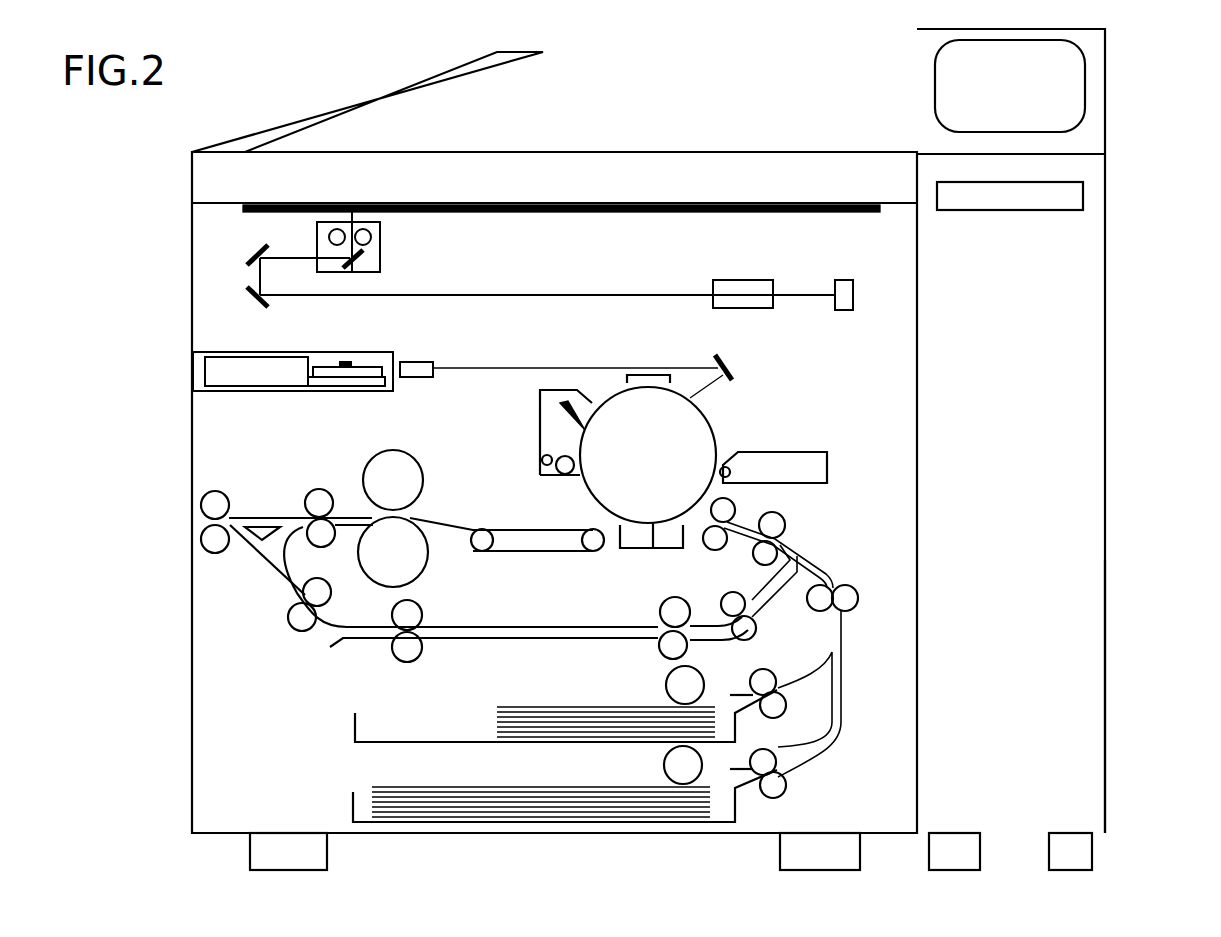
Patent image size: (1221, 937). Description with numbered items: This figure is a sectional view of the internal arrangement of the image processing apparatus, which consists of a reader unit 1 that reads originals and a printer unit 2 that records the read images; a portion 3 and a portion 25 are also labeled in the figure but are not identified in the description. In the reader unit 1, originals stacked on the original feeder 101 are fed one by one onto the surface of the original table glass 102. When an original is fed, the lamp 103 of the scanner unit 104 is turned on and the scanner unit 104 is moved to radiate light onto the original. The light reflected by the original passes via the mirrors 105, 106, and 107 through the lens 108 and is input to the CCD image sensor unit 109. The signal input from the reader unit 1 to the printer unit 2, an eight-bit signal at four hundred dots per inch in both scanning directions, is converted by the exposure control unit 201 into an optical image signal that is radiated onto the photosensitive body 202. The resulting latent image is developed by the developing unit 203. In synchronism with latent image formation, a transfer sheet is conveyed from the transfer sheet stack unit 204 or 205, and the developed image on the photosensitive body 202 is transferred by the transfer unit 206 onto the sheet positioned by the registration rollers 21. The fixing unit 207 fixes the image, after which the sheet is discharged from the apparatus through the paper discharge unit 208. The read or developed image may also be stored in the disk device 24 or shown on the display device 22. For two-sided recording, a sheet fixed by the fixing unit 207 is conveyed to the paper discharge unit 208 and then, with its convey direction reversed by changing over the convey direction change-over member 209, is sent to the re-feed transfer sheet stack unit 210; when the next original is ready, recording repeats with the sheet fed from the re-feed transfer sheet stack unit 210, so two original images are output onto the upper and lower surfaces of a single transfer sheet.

The reader unit 1 is at (1110, 181).
The printer unit 2 is at (1107, 490).
The sheet feeding section 3 is at (1093, 582).
The registration rollers 21 is at (733, 503).
The display device 22 is at (1072, 88).
The disk device 24 is at (1043, 210).
The image reading unit 25 is at (613, 155).
The original feeder 101 is at (340, 103).
The original table glass 102 is at (783, 203).
The lamp 103 is at (362, 225).
The scanner unit 104 is at (382, 252).
The mirror 105 is at (365, 268).
The mirror 106 is at (252, 254).
The mirror 107 is at (251, 301).
The lens 108 is at (740, 280).
The CCD image sensor unit 109 is at (843, 280).
The exposure control unit 201 is at (323, 366).
The photosensitive body 202 is at (612, 405).
The developing unit 203 is at (827, 466).
The transfer sheet stack unit 204 is at (594, 722).
The transfer sheet stack unit 205 is at (500, 802).
The transfer unit 206 is at (641, 556).
The fixing unit 207 is at (362, 528).
The paper discharge unit 208 is at (230, 497).
The convey direction change-over member 209 is at (268, 545).
The re-feed transfer sheet stack unit 210 is at (476, 640).